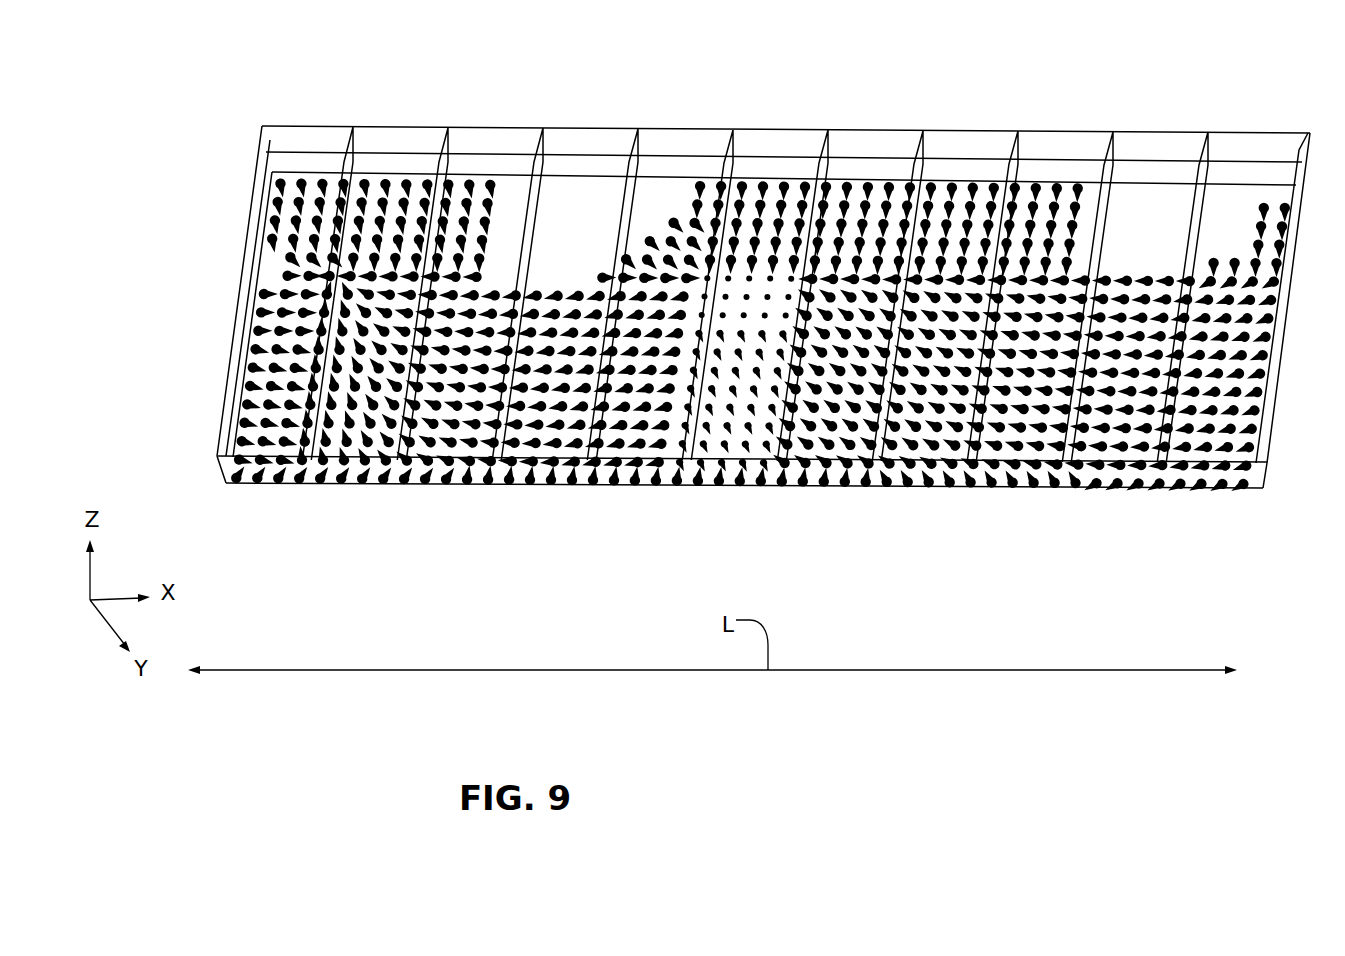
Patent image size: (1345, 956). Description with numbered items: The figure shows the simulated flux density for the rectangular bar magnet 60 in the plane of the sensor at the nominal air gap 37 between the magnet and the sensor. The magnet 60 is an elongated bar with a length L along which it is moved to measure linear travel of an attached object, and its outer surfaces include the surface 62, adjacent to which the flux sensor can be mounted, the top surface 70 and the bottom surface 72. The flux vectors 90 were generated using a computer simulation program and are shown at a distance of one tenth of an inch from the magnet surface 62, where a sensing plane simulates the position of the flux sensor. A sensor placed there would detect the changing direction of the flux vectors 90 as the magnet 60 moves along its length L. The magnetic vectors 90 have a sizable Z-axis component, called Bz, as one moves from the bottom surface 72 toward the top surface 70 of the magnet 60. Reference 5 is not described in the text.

The antenna structure 5 is at (265, 303).
The magnet 60 is at (690, 116).
The outer surface 62 is at (506, 168).
The top surface 70 is at (1160, 148).
The bottom surface 72 is at (214, 447).
The air gap 37 is at (202, 487).
The flux vectors 90 is at (850, 502).